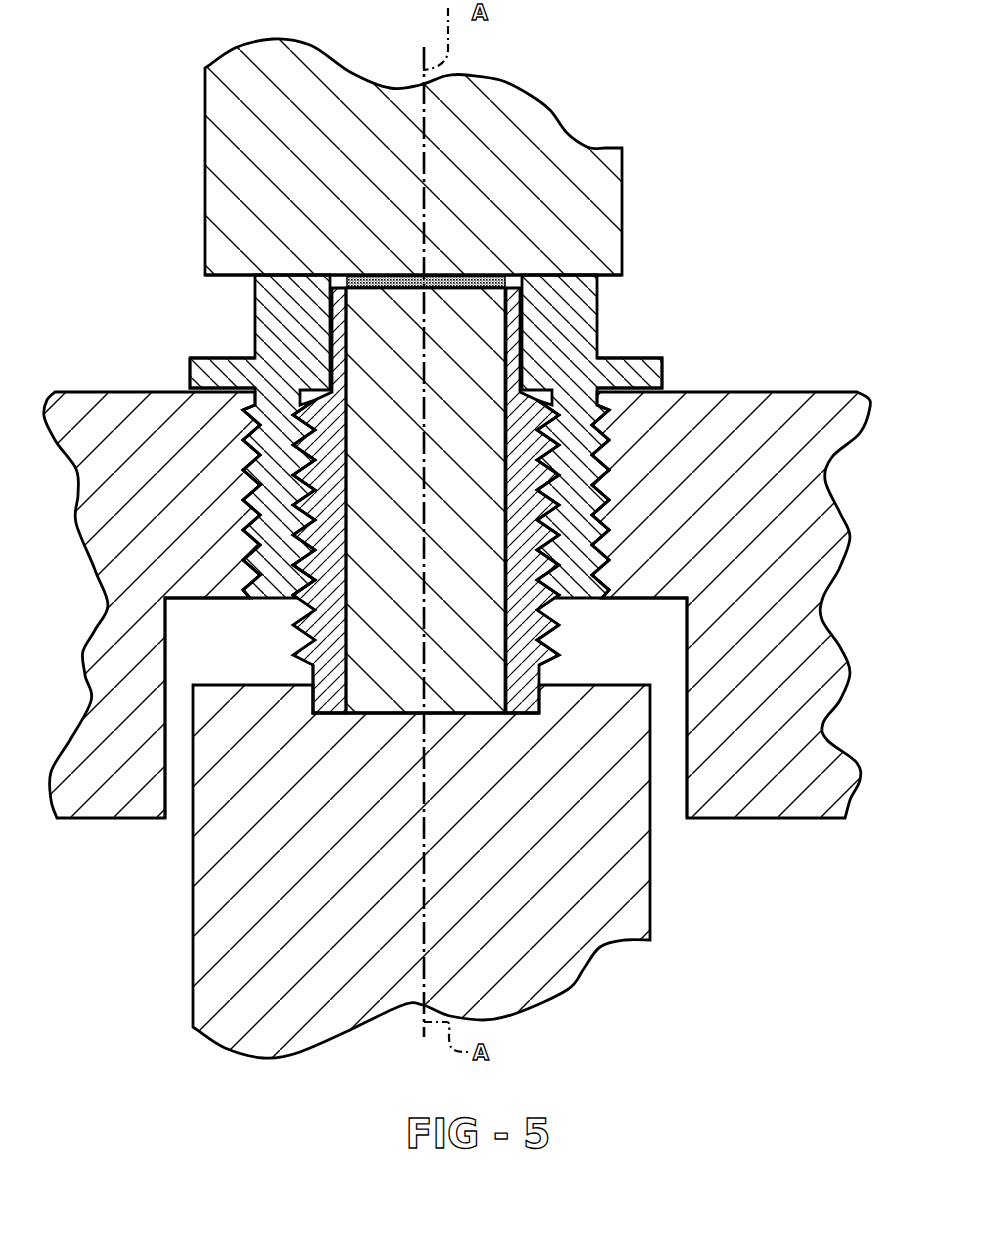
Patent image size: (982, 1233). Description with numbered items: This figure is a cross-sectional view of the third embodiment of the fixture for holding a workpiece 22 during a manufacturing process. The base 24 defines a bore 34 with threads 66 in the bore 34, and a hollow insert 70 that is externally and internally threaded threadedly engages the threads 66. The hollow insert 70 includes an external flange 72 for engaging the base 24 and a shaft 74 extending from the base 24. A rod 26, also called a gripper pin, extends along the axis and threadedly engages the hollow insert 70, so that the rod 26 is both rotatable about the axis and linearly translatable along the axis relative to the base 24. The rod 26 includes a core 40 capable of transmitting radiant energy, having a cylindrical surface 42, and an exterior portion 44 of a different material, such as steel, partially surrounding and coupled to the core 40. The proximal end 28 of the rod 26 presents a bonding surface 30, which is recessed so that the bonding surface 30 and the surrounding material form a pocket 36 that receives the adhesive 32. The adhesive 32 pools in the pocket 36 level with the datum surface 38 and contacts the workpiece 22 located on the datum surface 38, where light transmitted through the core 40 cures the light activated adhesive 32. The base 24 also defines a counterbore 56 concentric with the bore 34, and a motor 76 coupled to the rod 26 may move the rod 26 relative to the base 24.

The workpiece 22 is at (592, 188).
The base 24 is at (785, 407).
The rod 26 is at (586, 293).
The proximal end 28 is at (350, 298).
The bonding surface 30 is at (453, 278).
The adhesive 32 is at (398, 274).
The bore 34 is at (244, 426).
The pocket 36 is at (498, 280).
The datum surface 38 is at (243, 273).
The core 40 is at (400, 617).
The cylindrical surface 42 is at (498, 660).
The exterior portion 44 is at (323, 618).
The counterbore 56 is at (201, 624).
The threads 66 is at (600, 512).
The hollow insert 70 is at (573, 477).
The external flange 72 is at (208, 375).
The shaft 74 is at (265, 297).
The motor 76 is at (638, 870).